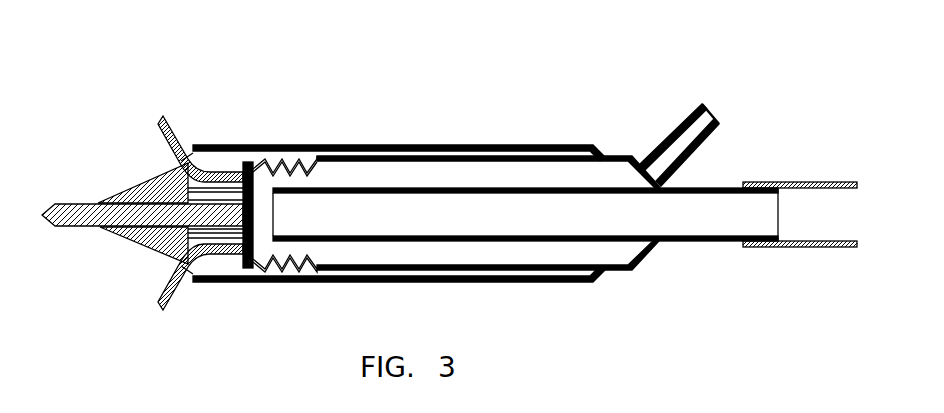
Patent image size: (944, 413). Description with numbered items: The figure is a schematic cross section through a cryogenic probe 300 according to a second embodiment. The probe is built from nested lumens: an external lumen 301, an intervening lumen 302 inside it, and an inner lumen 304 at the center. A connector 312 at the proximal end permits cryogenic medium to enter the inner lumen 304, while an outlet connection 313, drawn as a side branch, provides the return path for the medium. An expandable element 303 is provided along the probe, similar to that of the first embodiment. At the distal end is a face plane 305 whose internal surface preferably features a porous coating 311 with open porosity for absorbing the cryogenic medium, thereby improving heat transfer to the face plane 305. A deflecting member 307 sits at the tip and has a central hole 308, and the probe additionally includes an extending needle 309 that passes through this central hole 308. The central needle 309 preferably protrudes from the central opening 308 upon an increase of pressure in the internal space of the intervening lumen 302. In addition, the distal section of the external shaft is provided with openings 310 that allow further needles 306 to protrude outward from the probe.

The cryogenic probe 300 is at (365, 125).
The external lumen 301 is at (408, 146).
The intervening lumen 302 is at (495, 157).
The expandable element 303 is at (282, 165).
The inner lumen 304 is at (562, 241).
The face plane 305 is at (240, 162).
The needles 306 is at (183, 158).
The deflecting member 307 is at (120, 239).
The central hole 308 is at (111, 194).
The extending needle 309 is at (70, 203).
The openings 310 is at (187, 276).
The porous coating 311 is at (277, 268).
The connector 312 is at (783, 182).
The outlet connection 313 is at (678, 122).